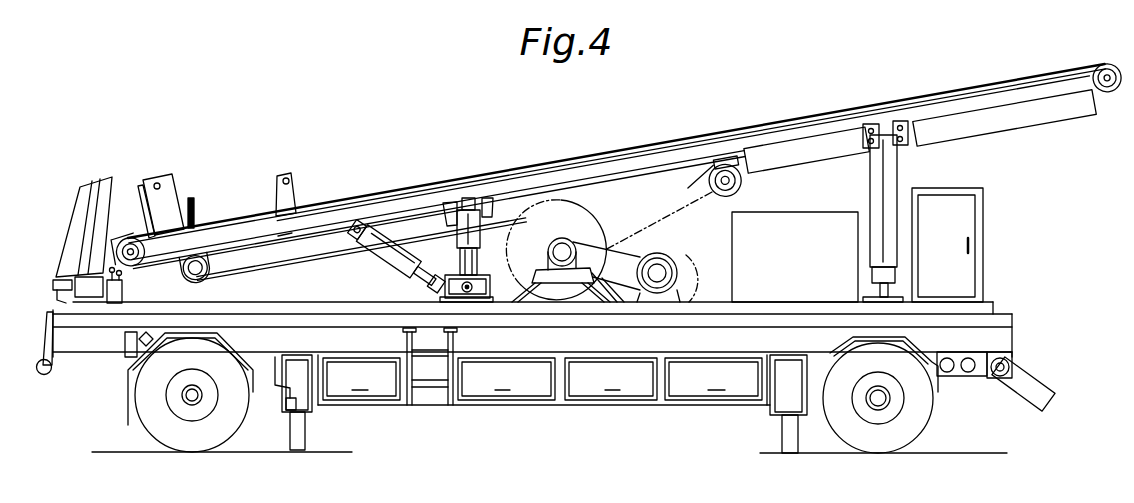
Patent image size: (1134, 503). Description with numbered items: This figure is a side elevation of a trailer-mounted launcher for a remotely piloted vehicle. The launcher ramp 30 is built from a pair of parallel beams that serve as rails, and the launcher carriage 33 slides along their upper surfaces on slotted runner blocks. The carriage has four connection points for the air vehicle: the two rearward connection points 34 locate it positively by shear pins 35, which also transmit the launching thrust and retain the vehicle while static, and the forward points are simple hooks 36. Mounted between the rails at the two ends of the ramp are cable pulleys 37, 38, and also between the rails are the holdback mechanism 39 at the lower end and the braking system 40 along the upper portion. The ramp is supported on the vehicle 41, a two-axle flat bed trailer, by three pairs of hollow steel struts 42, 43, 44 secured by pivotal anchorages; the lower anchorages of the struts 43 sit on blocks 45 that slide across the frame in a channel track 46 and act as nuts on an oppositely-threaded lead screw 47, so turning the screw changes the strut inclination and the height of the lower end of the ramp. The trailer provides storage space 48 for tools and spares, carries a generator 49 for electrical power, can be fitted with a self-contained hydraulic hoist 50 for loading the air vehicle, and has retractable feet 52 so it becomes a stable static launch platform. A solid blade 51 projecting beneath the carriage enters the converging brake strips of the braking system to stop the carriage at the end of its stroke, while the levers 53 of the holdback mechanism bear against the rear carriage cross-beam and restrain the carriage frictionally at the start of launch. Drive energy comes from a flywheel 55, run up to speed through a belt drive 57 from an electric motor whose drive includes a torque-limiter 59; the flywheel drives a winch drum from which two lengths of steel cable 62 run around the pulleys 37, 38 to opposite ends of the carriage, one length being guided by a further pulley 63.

The launcher ramp 30 is at (613, 179).
The launcher carriage 33 is at (298, 239).
The rearward connection points 34 is at (142, 197).
The shear pins 35 is at (157, 183).
The hooks 36 is at (297, 178).
The cable pulley 37 is at (129, 250).
The cable pulley 38 is at (1107, 78).
The holdback mechanism 39 is at (195, 268).
The braking system 40 is at (1005, 118).
The vehicle 41 is at (678, 338).
The struts 42 is at (387, 265).
The struts 43 is at (463, 218).
The struts 44 is at (890, 173).
The blocks 45 is at (470, 292).
The channel track 46 is at (437, 302).
The lead screw 47 is at (477, 298).
The storage space 48 is at (958, 227).
The generator 49 is at (827, 223).
The hydraulic hoist 50 is at (94, 190).
The blade 51 is at (285, 237).
The retractable feet 52 is at (307, 432).
The levers 53 is at (195, 198).
The flywheel 55 is at (560, 215).
The belt drive 57 is at (640, 245).
The torque-limiter 59 is at (663, 262).
The steel cable 62 is at (621, 177).
The pulley 63 is at (714, 179).